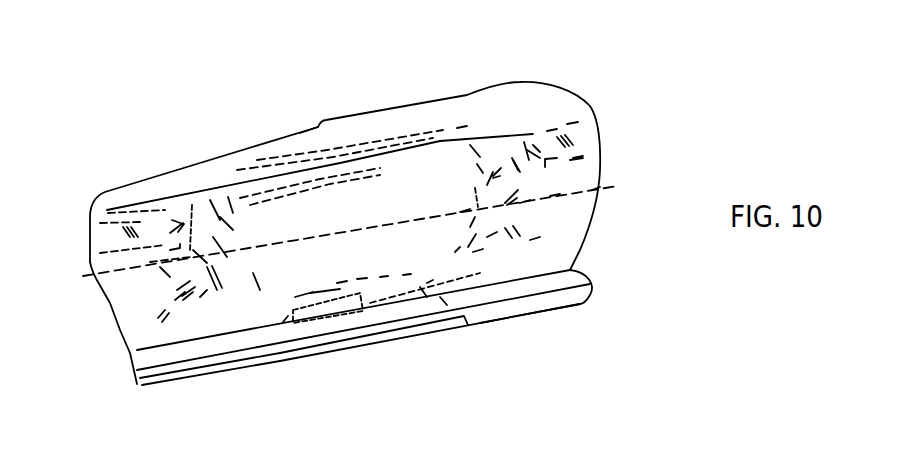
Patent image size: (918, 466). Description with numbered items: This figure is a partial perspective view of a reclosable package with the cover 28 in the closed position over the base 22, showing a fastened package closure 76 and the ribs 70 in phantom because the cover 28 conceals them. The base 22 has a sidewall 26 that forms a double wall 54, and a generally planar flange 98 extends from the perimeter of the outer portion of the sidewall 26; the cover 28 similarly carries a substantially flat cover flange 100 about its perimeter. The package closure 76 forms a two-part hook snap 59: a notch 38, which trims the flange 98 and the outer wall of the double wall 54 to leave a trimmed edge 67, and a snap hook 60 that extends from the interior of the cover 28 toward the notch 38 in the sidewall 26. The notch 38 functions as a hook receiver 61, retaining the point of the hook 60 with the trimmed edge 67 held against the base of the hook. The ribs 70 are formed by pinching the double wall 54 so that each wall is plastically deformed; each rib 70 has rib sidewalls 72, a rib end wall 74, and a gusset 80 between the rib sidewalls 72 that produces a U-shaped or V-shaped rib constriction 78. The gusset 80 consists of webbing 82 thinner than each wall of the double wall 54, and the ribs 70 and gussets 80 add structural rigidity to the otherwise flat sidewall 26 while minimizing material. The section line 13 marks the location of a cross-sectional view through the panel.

The section line 13 is at (73, 274).
The base 22 is at (507, 317).
The sidewall 26 is at (583, 141).
The cover 28 is at (320, 126).
The notch 38 is at (218, 368).
The double wall 54 is at (455, 147).
The hook snap 59 is at (323, 270).
The snap hook 60 is at (305, 273).
The hook receiver 61 is at (273, 303).
The trimmed edge 67 is at (385, 279).
The rib 70 is at (178, 212).
The rib sidewall 72 is at (158, 290).
The rib end wall 74 is at (187, 313).
The package closure 76 is at (330, 351).
The rib constriction 78 is at (200, 268).
The gusset 80 is at (216, 217).
The webbing 82 is at (193, 247).
The flange 98 is at (552, 310).
The cover flange 100 is at (571, 278).